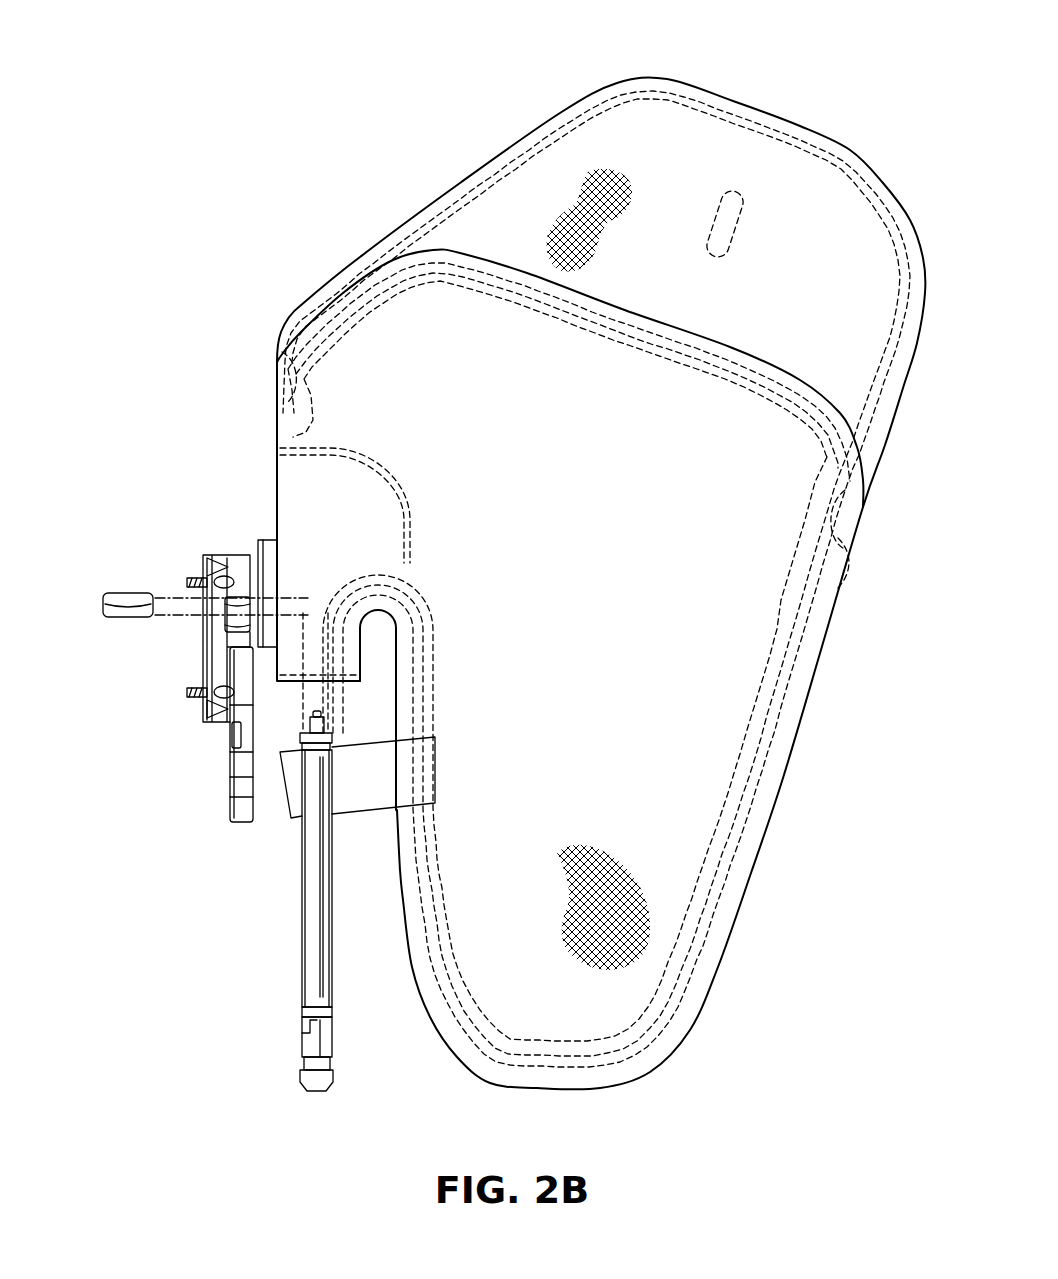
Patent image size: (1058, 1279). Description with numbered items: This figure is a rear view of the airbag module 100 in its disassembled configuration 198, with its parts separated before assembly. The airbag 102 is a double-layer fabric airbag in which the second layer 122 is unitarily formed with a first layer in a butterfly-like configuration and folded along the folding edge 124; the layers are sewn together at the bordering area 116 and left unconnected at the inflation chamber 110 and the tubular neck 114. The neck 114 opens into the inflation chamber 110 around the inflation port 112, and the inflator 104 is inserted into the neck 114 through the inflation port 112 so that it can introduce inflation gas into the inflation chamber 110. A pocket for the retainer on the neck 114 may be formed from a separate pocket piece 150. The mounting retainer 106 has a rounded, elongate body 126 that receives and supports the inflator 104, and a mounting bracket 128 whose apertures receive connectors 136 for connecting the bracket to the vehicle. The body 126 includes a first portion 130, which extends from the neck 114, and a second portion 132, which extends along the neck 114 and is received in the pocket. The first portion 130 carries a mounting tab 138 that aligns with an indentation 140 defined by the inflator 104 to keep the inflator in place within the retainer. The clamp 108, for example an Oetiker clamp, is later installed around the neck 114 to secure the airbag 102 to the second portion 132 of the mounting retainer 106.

The airbag module 100 is at (183, 465).
The airbag 102 is at (676, 80).
The inflator 104 is at (267, 901).
The mounting retainer 106 is at (158, 737).
The clamp 108 is at (130, 595).
The inflation chamber 110 is at (773, 163).
The inflation port 112 is at (317, 683).
The tubular neck 114 is at (362, 647).
The bordering area 116 is at (877, 188).
The second layer 122 is at (857, 262).
The folding edge 124 is at (277, 490).
The body 126 is at (230, 737).
The mounting bracket 128 is at (203, 713).
The first portion 130 is at (230, 805).
The second portion 132 is at (203, 559).
The connectors 136 is at (187, 583).
The mounting tab 138 is at (230, 763).
The indentation 140 is at (302, 1030).
The pocket piece 150 is at (258, 540).
The disassembled configuration 198 is at (149, 884).